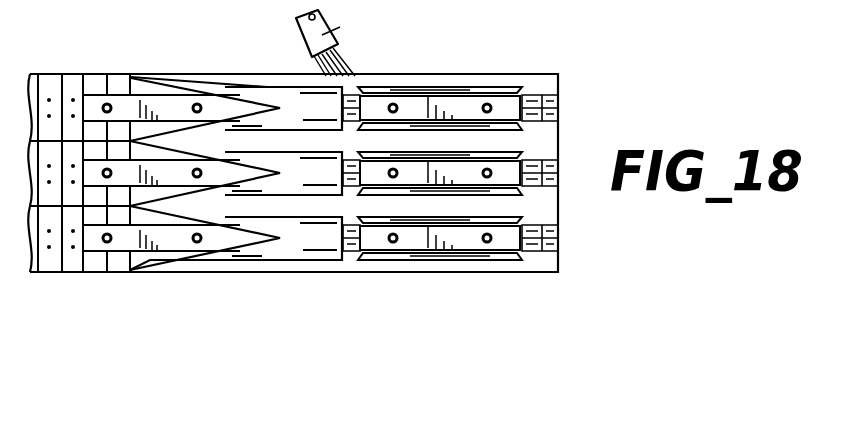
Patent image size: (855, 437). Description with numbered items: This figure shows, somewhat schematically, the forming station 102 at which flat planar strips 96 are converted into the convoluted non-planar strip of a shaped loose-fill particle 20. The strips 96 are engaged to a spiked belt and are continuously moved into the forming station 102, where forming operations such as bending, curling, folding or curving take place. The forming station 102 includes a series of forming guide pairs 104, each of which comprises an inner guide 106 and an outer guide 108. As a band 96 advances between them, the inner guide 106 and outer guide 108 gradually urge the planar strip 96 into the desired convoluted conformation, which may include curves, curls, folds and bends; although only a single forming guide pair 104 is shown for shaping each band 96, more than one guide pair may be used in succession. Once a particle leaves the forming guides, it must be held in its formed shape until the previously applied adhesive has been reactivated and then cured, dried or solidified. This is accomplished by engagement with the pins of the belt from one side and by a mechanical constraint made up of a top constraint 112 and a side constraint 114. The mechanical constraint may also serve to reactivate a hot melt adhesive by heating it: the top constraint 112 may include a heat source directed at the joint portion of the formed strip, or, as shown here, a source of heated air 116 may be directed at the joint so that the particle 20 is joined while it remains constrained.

The shaped particle 20 is at (548, 256).
The strip 96 is at (71, 76).
The forming station 102 is at (458, 58).
The forming guide pair 104 is at (180, 258).
The inner guide 106 is at (101, 246).
The outer guide 108 is at (243, 90).
The top constraint 112 is at (377, 240).
The side constraint 114 is at (428, 257).
The source of heated air 116 is at (342, 27).